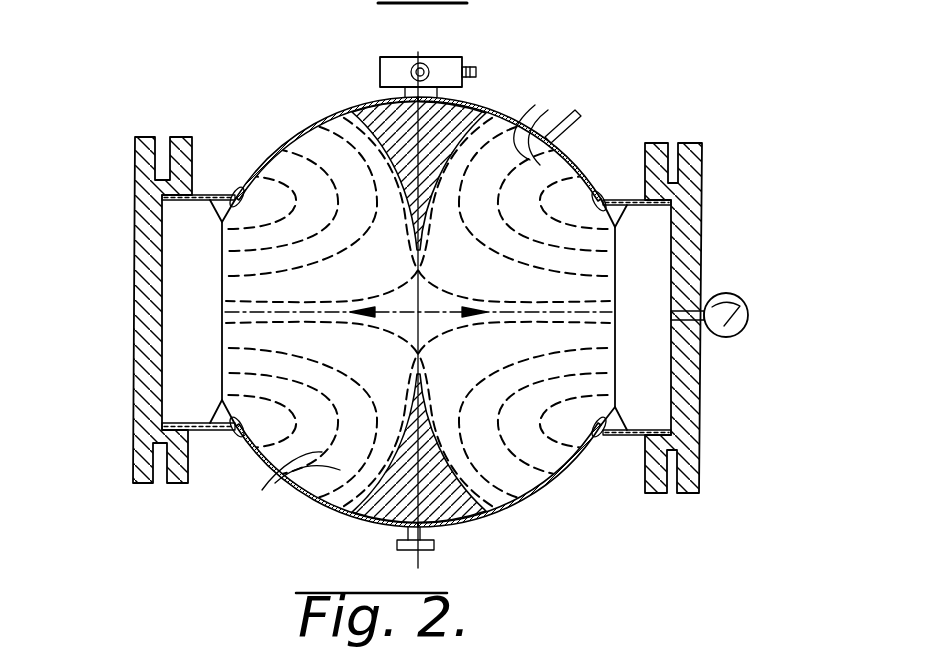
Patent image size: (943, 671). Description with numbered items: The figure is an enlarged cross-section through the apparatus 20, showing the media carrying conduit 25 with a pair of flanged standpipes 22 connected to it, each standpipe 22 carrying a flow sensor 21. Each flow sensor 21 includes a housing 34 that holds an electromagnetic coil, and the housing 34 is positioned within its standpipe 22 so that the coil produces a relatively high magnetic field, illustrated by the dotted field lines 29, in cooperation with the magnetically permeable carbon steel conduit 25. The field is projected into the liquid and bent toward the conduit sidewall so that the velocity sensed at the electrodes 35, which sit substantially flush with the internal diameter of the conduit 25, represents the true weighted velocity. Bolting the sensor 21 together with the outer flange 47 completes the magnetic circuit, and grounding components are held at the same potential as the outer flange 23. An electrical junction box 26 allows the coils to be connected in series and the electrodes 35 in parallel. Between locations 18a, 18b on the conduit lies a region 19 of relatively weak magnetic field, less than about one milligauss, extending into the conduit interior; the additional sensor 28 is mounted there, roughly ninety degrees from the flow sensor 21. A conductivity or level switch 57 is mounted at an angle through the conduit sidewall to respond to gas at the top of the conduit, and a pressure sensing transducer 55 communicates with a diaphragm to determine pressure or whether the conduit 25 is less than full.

The location on the conduit 18a is at (343, 111).
The location on the conduit 18b is at (494, 112).
The region of relatively weak magnetic field 19 is at (390, 114).
The apparatus 20 is at (620, 49).
The flow sensor 21 is at (419, 327).
The flanged standpipe 22 is at (212, 192).
The outer flange 23 is at (181, 484).
The media carrying conduit 25 is at (316, 113).
The electrical junction box 26 is at (380, 66).
The additional sensor 28 is at (397, 545).
The magnetic field lines 29 is at (522, 125).
The housing 34 is at (240, 311).
The electrodes 35 is at (240, 188).
The outer flange 47 is at (133, 350).
The pressure sensing transducer 55 is at (744, 301).
The level switch 57 is at (576, 118).